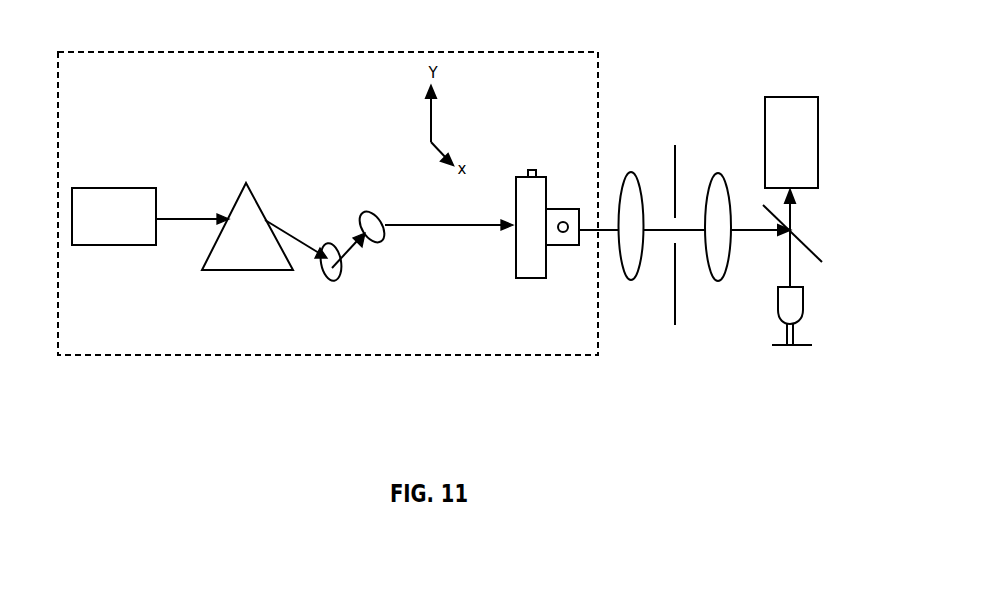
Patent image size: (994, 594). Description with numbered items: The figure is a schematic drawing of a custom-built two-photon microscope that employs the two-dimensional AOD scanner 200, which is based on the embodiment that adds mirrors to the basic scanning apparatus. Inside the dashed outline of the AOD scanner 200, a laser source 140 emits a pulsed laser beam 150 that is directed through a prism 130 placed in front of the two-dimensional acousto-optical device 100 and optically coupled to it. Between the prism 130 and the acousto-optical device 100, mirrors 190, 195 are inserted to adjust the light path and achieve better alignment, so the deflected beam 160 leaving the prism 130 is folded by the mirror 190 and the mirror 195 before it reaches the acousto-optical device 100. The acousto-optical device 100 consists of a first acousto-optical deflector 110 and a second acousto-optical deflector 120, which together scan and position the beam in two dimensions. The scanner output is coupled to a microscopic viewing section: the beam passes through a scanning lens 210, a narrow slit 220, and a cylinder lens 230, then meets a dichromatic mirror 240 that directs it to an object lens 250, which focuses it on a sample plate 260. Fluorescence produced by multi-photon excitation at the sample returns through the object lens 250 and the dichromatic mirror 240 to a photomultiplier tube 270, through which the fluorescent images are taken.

The two-dimensional acousto-optical device 100 is at (528, 181).
The first acousto-optical deflector 110 is at (532, 169).
The second acousto-optical deflector 120 is at (555, 208).
The prism 130 is at (238, 200).
The laser source 140 is at (112, 184).
The pulsed laser beam 150 is at (200, 215).
The deflected light beam 160 is at (289, 233).
The mirror 190 is at (341, 271).
The mirror 195 is at (368, 210).
The 2-D AOD scanner 200 is at (384, 38).
The scanning lens 210 is at (632, 171).
The narrow slit 220 is at (678, 151).
The cylinder lens 230 is at (710, 288).
The dichromatic mirror 240 is at (812, 253).
The object lens 250 is at (806, 305).
The sample plate 260 is at (780, 352).
The photomultiplier tube 270 is at (782, 96).